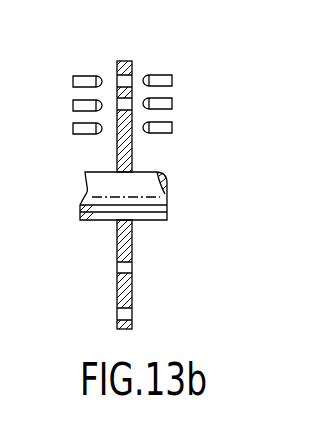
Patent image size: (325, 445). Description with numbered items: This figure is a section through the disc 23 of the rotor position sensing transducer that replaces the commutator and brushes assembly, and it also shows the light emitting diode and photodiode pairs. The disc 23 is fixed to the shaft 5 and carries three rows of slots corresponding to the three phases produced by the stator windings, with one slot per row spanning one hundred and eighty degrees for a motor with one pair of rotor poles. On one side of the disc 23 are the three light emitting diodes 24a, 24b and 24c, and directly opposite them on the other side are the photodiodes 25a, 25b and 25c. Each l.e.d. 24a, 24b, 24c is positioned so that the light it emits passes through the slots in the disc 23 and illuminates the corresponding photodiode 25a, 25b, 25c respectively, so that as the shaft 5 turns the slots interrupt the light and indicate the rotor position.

The shaft 5 is at (163, 193).
The disc 23 is at (124, 250).
The light emitting diode 24a is at (73, 81).
The light emitting diode 24b is at (73, 105).
The light emitting diode 24c is at (73, 126).
The photodiode 25a is at (172, 80).
The photodiode 25b is at (172, 103).
The photodiode 25c is at (172, 127).